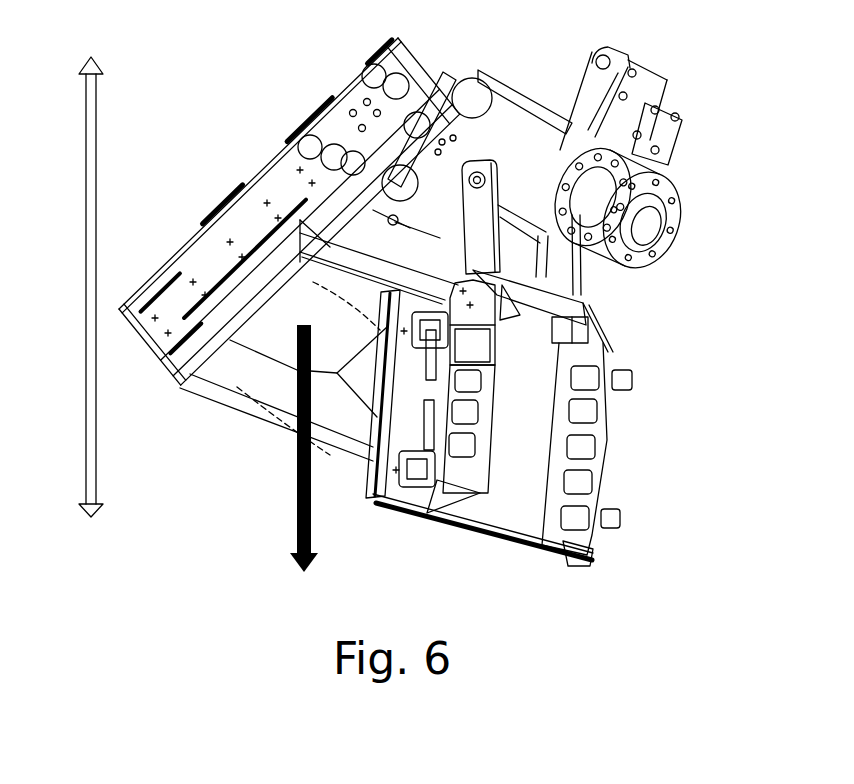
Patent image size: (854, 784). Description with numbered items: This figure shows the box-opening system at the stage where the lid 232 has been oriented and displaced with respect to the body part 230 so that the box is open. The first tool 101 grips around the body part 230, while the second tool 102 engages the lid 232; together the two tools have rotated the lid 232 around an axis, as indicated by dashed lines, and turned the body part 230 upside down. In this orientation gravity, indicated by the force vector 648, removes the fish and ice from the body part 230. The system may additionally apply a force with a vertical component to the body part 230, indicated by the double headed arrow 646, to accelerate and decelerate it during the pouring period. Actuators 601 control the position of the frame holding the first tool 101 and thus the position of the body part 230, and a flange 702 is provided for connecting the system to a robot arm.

The first tool 101 is at (252, 242).
The second tool 102 is at (482, 495).
The body part 230 is at (355, 222).
The lid 232 is at (532, 462).
The actuator 601 is at (388, 177).
The double headed arrow 646 is at (135, 261).
The force vector 648 is at (296, 512).
The flange 702 is at (650, 226).